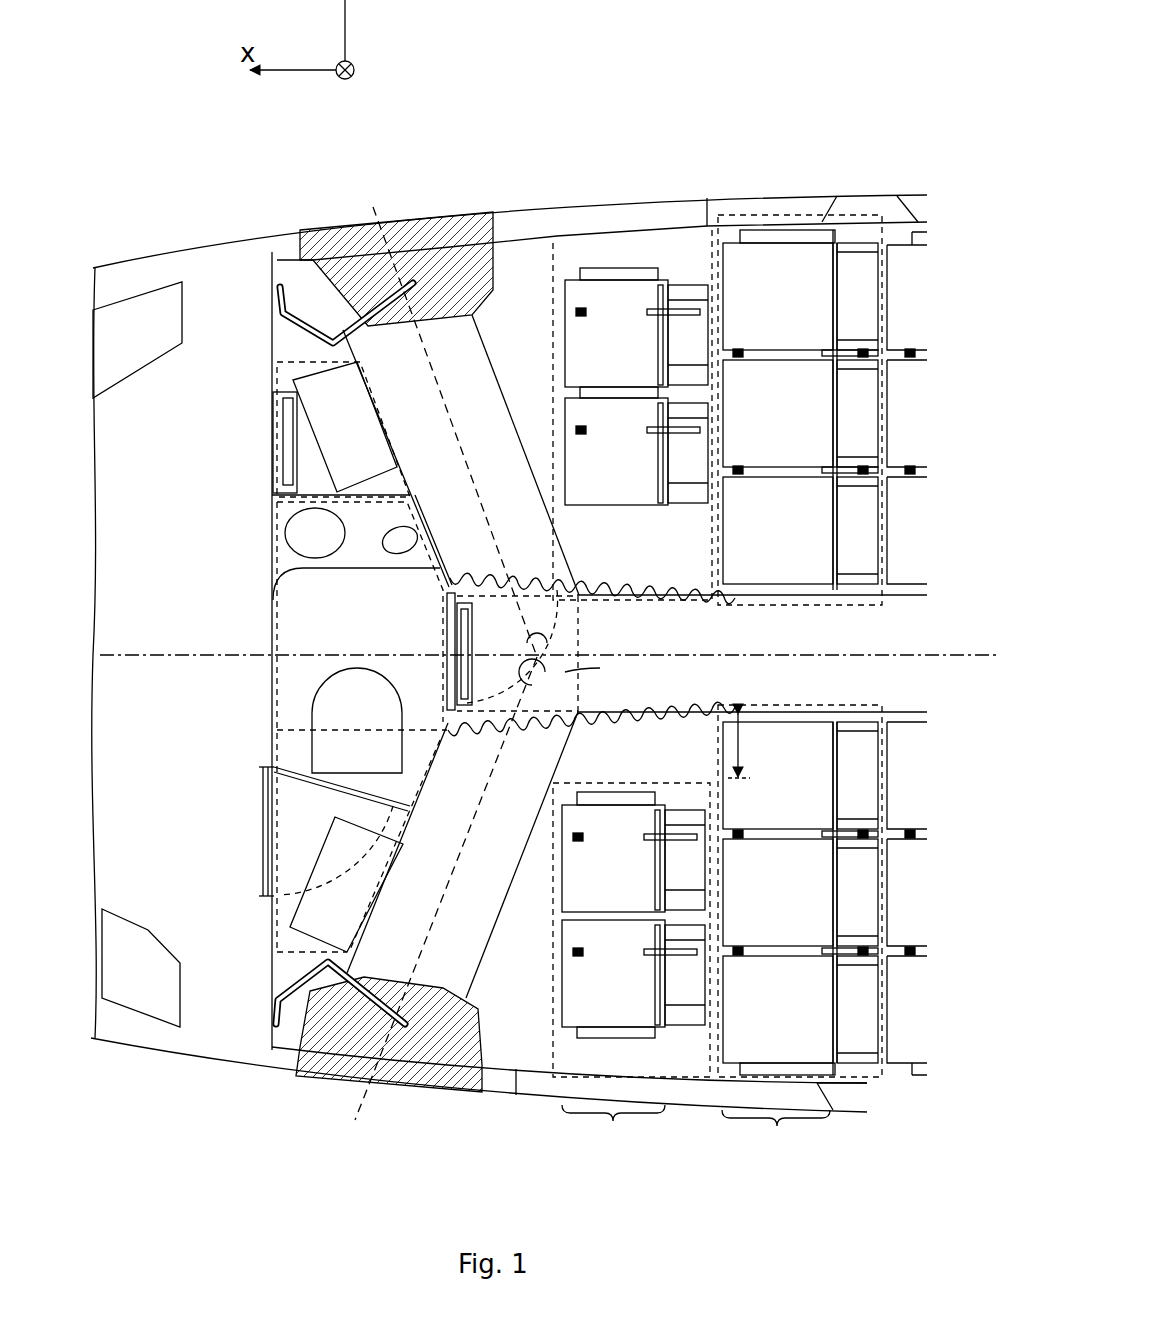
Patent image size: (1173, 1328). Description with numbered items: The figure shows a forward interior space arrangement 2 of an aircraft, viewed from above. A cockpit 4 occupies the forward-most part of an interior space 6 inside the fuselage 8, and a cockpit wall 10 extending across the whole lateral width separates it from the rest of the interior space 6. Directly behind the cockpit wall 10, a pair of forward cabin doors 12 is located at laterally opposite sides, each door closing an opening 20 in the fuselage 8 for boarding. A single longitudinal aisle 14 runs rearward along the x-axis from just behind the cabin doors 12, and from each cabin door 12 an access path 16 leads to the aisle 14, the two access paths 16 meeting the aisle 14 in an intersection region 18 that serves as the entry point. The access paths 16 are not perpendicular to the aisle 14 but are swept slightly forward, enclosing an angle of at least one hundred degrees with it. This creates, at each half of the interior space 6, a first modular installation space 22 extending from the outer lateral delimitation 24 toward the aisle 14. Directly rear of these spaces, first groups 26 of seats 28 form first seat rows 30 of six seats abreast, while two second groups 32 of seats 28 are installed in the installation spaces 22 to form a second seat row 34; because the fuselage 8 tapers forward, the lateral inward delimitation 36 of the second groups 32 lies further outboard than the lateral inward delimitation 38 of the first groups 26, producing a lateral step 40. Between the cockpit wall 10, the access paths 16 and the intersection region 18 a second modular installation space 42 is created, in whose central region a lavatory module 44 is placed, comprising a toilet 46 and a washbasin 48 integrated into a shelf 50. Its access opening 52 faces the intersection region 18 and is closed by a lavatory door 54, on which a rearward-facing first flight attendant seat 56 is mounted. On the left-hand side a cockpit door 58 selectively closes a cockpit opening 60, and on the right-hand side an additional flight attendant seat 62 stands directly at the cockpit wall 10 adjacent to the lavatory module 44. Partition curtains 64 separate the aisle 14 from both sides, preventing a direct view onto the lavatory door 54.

The arrangement 2 is at (215, 203).
The cockpit 4 is at (182, 587).
The interior space 6 is at (580, 243).
The fuselage 8 is at (152, 257).
The cockpit wall 10 is at (272, 375).
The forward cabin doors 12 is at (412, 228).
The longitudinal aisle 14 is at (839, 647).
The access path 16 is at (483, 468).
The intersection region 18 is at (565, 646).
The opening 20 is at (295, 1083).
The first modular installation space 22 is at (655, 252).
The outer lateral delimitation 24 is at (617, 240).
The first groups of seats 26 is at (773, 215).
The seats 28 is at (598, 970).
The first seat rows 30 is at (776, 1133).
The second groups of seats 32 is at (597, 783).
The second seat row 34 is at (613, 1129).
The lateral inward delimitation of the second group 36 is at (680, 768).
The lateral inward delimitation of the first group 38 is at (740, 705).
The step 40 is at (753, 746).
The second modular installation space 42 is at (272, 470).
The lavatory module 44 is at (305, 673).
The toilet 46 is at (373, 740).
The washbasin 48 is at (312, 547).
The shelf 50 is at (368, 548).
The access opening 52 is at (450, 590).
The lavatory door 54 is at (443, 683).
The first flight attendant seat 56 is at (470, 640).
The cockpit door 58 is at (324, 785).
The cockpit opening 60 is at (263, 832).
The additional flight attendant seat 62 is at (292, 445).
The partition curtains 64 is at (615, 590).